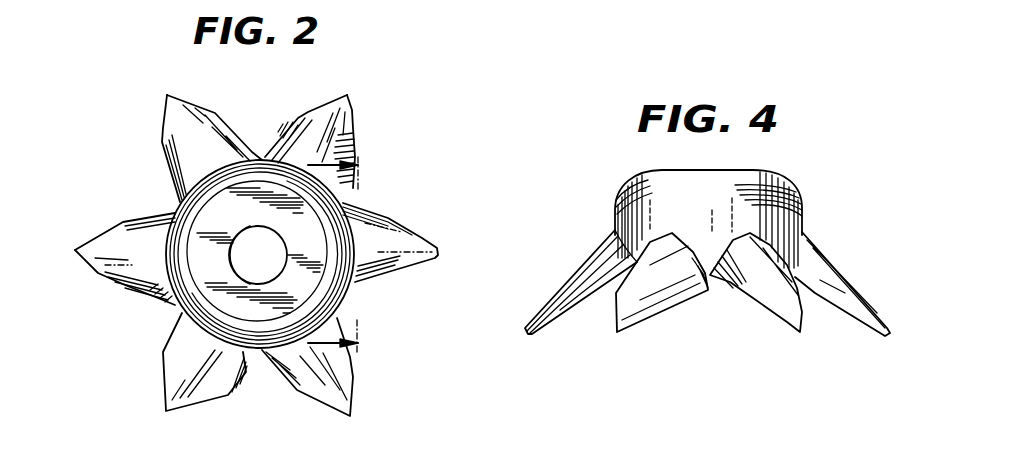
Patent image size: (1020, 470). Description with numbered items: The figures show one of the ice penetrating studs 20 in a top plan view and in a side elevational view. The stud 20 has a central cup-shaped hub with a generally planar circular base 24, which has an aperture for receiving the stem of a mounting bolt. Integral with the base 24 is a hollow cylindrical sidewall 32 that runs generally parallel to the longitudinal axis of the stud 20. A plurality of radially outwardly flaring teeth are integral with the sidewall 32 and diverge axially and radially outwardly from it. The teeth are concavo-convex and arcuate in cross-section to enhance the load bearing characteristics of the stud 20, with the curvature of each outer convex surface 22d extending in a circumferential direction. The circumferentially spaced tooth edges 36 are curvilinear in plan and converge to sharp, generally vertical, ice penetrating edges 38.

In FIG. 2, the ice penetrating stud 20 is at (276, 265).
In FIG. 2, the circular base 24 is at (202, 223).
In FIG. 2, the outer convex surface 22d is at (187, 352).
In FIG. 4, the outer convex surface 22d is at (737, 283).
In FIG. 2, the ice penetrating edge 38 is at (438, 250).
In FIG. 4, the ice penetrating edge 38 is at (619, 332).
In FIG. 4, the cylindrical sidewall 32 is at (802, 213).
In FIG. 4, the tooth edge 36 is at (813, 295).